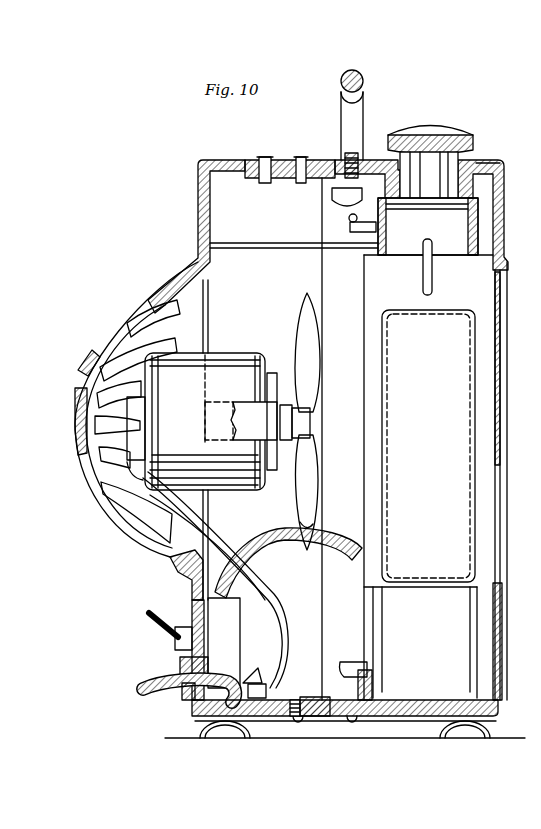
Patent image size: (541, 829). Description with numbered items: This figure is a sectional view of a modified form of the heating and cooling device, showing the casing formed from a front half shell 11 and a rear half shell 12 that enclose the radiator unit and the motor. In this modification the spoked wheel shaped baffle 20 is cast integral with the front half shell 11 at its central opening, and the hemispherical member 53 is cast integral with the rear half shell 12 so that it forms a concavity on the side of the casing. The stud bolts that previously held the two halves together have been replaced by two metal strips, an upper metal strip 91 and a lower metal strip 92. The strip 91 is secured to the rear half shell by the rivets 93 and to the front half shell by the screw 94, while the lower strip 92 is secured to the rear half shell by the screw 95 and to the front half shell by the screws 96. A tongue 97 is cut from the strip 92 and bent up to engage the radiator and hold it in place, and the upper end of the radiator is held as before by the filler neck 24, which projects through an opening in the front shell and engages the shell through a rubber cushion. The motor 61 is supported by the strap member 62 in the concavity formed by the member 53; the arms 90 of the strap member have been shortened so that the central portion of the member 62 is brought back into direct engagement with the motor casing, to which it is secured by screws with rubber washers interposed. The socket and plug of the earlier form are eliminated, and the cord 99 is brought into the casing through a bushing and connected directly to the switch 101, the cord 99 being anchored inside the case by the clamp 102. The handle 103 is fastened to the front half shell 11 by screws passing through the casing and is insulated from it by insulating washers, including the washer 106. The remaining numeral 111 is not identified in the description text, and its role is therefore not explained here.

The front half shell 11 is at (508, 186).
The rear half shell 12 is at (380, 45).
The wheel shaped baffle 20 is at (498, 402).
The filler neck 24 is at (452, 160).
The hemispherical member 53 is at (81, 385).
The motor 61 is at (212, 353).
The strap member 62 is at (275, 372).
The arms of the strap member 90 is at (242, 403).
The metal strip 91 is at (300, 157).
The metal strip 92 is at (328, 717).
The rivets 93 is at (272, 157).
The screw 94 is at (346, 153).
The screw 95 is at (296, 717).
The screws 96 is at (362, 702).
The tongue 97 is at (376, 690).
The cord 99 is at (162, 680).
The switch 101 is at (195, 598).
The clamp 102 is at (264, 718).
The handle 103 is at (364, 86).
The insulating washer 106 is at (184, 700).
The cover plate 111 is at (503, 164).